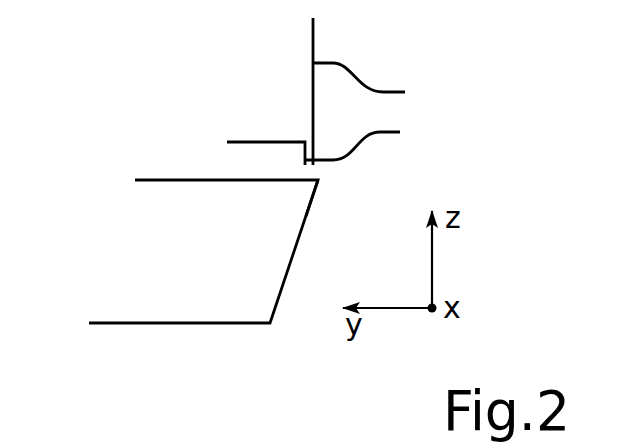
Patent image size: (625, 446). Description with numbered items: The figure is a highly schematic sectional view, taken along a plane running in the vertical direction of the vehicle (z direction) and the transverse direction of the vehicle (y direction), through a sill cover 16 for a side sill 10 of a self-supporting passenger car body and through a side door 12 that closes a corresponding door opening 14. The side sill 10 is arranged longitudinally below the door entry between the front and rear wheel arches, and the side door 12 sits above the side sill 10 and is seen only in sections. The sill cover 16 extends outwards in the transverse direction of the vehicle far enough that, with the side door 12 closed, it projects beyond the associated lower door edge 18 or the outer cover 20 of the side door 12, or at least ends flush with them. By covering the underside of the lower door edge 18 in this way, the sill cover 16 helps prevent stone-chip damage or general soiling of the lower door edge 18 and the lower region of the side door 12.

The side sill 10 is at (294, 334).
The side door 12 is at (386, 52).
The door opening 14 is at (207, 64).
The sill cover 16 is at (321, 192).
The lower door edge 18 is at (373, 137).
The outer cover 20 is at (378, 85).